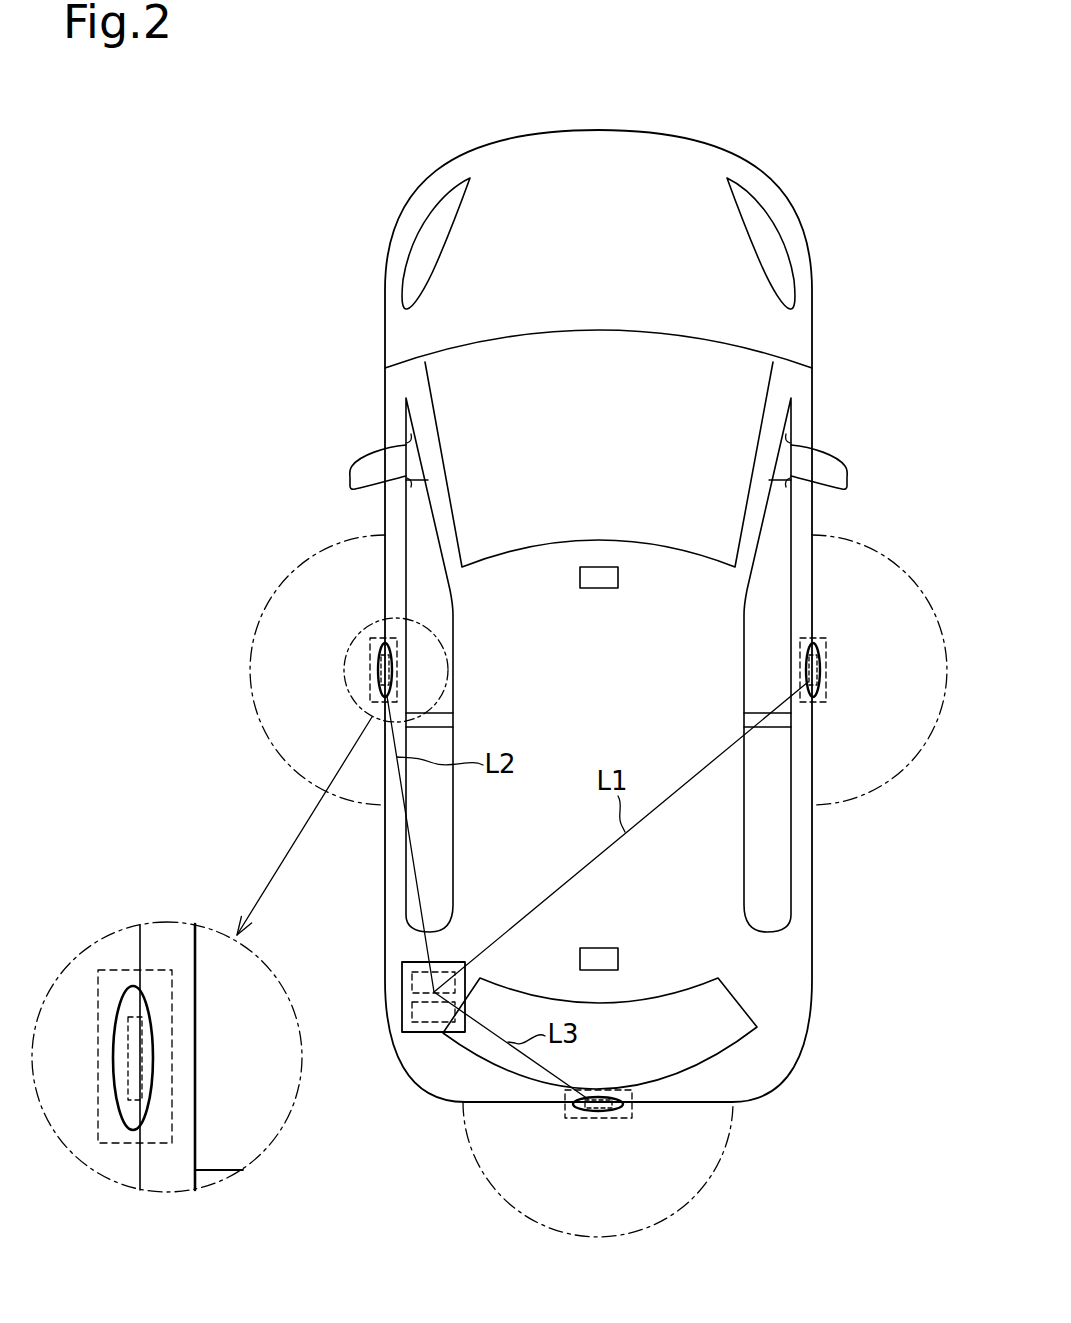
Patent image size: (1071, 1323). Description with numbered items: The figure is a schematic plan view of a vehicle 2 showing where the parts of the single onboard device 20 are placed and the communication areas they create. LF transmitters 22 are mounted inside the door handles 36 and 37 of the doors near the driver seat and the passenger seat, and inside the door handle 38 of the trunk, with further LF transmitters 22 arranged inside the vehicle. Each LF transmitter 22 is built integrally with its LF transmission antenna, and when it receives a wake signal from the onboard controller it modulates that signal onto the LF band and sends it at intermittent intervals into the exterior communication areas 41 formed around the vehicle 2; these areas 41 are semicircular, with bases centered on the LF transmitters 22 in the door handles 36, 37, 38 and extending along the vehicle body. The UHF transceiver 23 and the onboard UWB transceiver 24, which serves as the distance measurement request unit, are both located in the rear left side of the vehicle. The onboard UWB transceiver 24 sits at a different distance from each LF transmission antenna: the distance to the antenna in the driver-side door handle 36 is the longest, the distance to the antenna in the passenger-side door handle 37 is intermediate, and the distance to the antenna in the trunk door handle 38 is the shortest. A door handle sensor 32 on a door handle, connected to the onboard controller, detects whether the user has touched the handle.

The vehicle 2 is at (597, 130).
The onboard device 20 is at (402, 967).
The LF transmitter 22 is at (598, 590).
The UHF transceiver 23 is at (412, 984).
The onboard UWB transceiver 24 is at (412, 1012).
The door handle sensor 32 is at (142, 1070).
The door handle near the driver seat 36 is at (822, 662).
The door handle near the passenger seat 37 is at (372, 655).
The door handle of the trunk 38 is at (610, 1118).
The communication area 41 is at (300, 565).